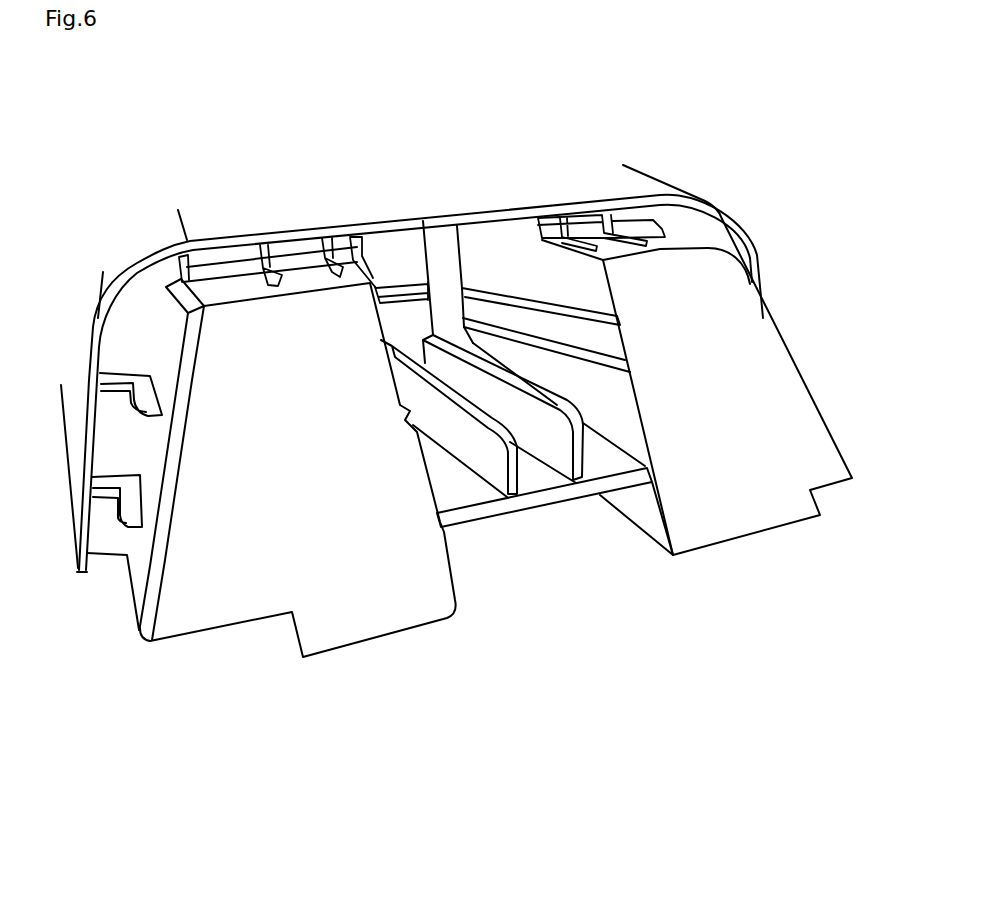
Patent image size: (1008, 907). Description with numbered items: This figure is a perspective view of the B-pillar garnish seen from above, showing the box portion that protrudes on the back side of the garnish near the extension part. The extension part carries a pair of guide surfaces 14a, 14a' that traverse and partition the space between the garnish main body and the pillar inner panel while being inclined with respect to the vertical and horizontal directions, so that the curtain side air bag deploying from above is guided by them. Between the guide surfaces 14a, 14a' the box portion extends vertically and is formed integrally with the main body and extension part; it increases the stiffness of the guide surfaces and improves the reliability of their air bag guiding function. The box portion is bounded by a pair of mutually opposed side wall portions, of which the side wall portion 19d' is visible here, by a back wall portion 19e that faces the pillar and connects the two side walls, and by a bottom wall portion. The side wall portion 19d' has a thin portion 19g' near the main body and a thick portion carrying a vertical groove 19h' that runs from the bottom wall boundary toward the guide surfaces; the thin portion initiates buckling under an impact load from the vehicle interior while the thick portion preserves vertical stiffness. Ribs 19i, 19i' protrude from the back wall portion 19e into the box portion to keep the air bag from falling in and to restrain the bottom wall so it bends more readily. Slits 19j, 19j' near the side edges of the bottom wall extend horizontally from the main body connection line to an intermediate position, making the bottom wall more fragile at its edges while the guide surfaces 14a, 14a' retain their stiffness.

The guide surface 14a is at (298, 513).
The guide surface 14a' is at (744, 360).
The slit 19j is at (263, 228).
The slit 19j' is at (552, 203).
The thin portion 19g' is at (684, 242).
The groove 19h' is at (655, 334).
The rib 19i is at (456, 473).
The rib 19i' is at (514, 461).
The back wall portion 19e is at (458, 520).
The side wall portion 19d' is at (696, 552).